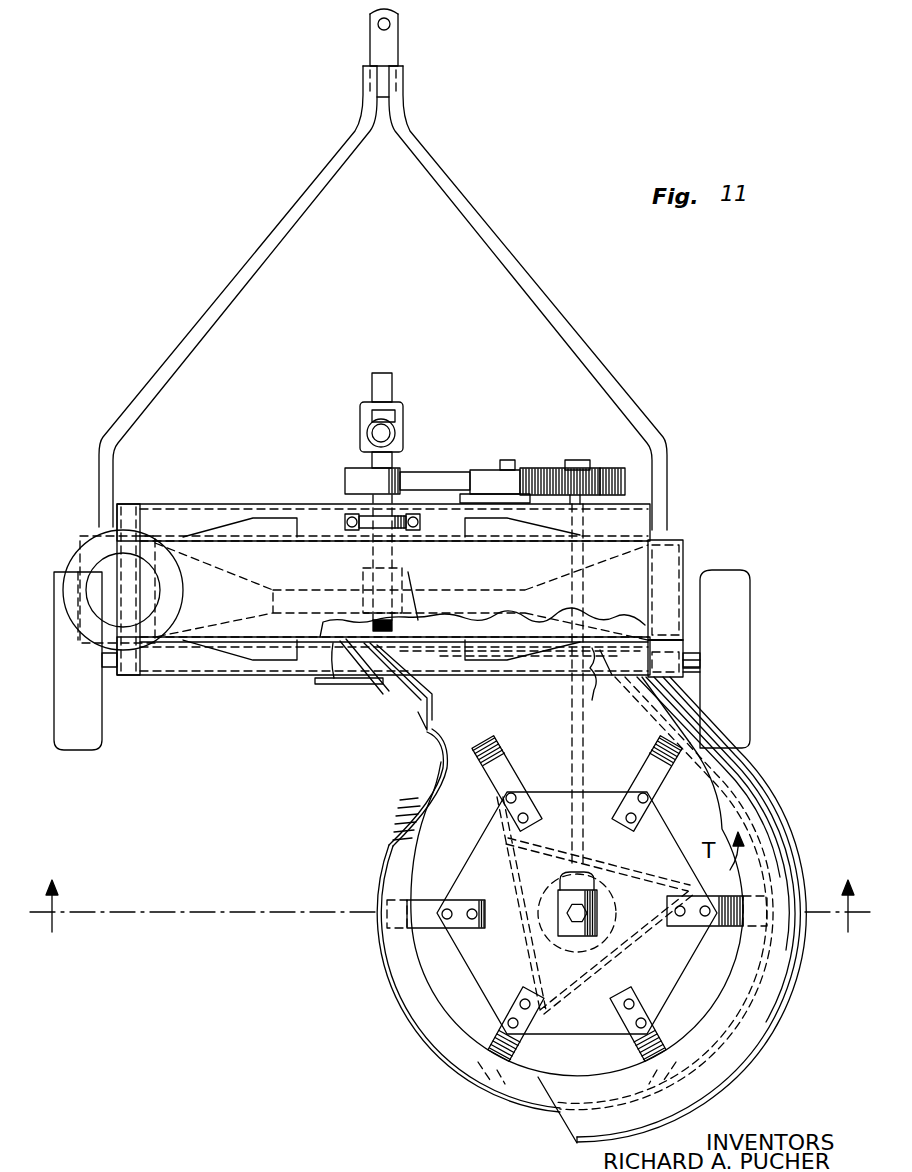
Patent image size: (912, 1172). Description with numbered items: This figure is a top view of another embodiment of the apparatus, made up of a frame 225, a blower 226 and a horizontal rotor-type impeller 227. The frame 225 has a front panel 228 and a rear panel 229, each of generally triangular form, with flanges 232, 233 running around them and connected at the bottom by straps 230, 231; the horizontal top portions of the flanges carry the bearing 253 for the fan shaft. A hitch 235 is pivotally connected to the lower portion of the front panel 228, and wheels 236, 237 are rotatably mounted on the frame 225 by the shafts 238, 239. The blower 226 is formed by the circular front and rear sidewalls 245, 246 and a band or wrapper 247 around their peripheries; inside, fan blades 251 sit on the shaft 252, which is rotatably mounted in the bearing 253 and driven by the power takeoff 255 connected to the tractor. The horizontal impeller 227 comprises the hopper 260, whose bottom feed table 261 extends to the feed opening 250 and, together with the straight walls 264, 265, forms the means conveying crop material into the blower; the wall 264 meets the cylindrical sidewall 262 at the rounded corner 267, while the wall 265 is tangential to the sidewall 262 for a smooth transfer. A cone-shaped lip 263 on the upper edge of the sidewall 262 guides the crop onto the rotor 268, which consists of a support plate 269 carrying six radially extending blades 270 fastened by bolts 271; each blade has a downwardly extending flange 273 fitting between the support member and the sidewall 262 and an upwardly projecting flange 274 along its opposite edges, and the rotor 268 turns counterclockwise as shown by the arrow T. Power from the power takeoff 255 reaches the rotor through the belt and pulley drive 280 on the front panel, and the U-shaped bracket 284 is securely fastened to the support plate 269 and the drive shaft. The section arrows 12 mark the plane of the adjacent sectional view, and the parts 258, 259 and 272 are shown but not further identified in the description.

The section line 12- 12 is at (452, 926).
The frame 225 is at (287, 501).
The blower 226 is at (697, 550).
The horizontal rotor-type impeller 227 is at (754, 750).
The front panel 228 is at (182, 504).
The rear panel 229 is at (196, 677).
The strap 230 is at (130, 504).
The strap 231 is at (632, 515).
The flange 232 is at (316, 502).
The flange 233 is at (257, 678).
The hitch 235 is at (492, 230).
The wheel 236 is at (102, 738).
The wheel 237 is at (740, 647).
The shaft 238 is at (108, 688).
The shaft 239 is at (692, 652).
The front sidewall 245 is at (680, 540).
The rear sidewall 246 is at (690, 672).
The band or wrapper 247 is at (690, 580).
The feed opening 250 is at (433, 652).
The blades 251 is at (256, 580).
The shaft 252 is at (412, 584).
The bearing 253 is at (421, 521).
The power takeoff 255 is at (395, 381).
The bracket 258 is at (355, 686).
The hub housing 259 is at (700, 700).
The hopper 260 is at (528, 1084).
The feed table 261 is at (705, 800).
The sidewall 262 is at (410, 1033).
The cone-shaped lip 263 is at (690, 1105).
The straight wall 264 is at (408, 713).
The straight wall 265 is at (592, 668).
The rounded corner 267 is at (446, 745).
The rotor 268 is at (692, 830).
The support plate 269 is at (676, 997).
The blades 270 is at (688, 934).
The bolts 271 is at (681, 905).
The hub nut 272 is at (582, 910).
The downwardly extending flange 273 is at (738, 900).
The upwardly projecting flange 274 is at (712, 932).
The belt and pulley drive 280 is at (432, 456).
The U-shaped bracket 284 is at (576, 938).